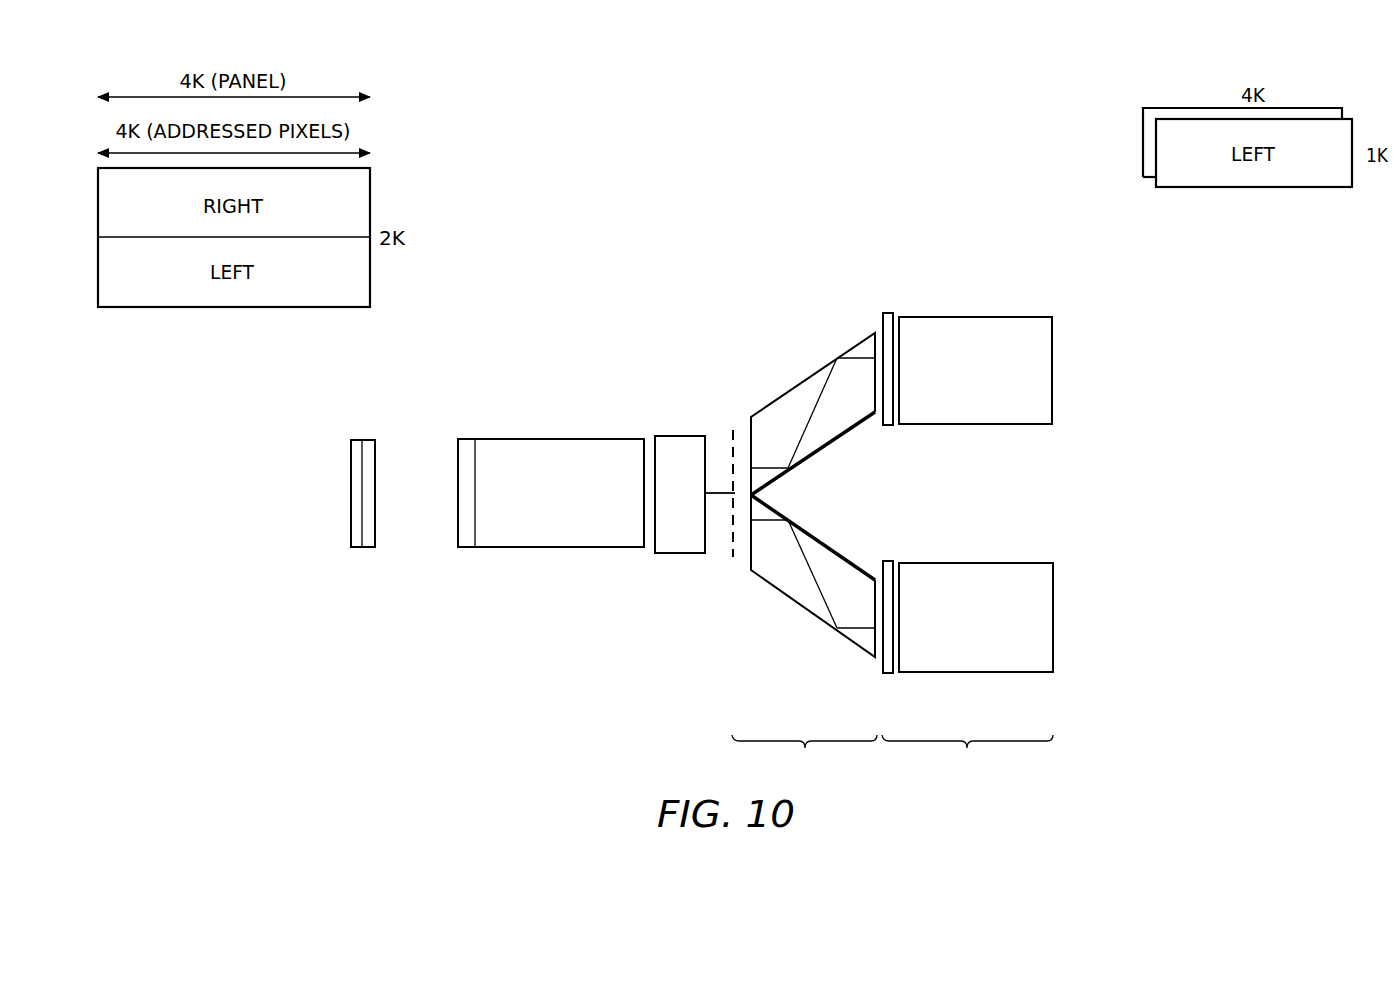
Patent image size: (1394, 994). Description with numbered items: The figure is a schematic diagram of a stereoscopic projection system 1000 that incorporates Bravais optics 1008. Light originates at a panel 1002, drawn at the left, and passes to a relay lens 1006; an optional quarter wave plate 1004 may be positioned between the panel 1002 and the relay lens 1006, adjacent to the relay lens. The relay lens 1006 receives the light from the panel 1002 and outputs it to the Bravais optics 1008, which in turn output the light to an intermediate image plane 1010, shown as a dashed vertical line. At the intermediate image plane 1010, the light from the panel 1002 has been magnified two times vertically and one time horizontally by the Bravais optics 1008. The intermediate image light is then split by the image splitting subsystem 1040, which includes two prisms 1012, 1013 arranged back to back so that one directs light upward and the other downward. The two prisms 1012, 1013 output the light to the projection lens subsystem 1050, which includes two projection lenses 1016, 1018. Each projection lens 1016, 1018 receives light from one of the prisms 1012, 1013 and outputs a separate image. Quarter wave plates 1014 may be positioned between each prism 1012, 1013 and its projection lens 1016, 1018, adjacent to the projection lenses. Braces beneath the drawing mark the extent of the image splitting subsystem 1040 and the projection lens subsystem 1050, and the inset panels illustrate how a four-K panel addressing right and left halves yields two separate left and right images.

The stereoscopic projection system 1000 is at (368, 656).
The panel 1002 is at (350, 483).
The quarter wave plate 1004 is at (458, 455).
The relay lens 1006 is at (528, 506).
The Bravais optics 1008 is at (681, 555).
The intermediate image plane 1010 is at (732, 422).
The prism 1012 is at (808, 378).
The prism 1013 is at (792, 598).
The quarter wave plate 1014 is at (890, 312).
The projection lens 1016 is at (1003, 383).
The projection lens 1018 is at (1003, 630).
The image splitting subsystem 1040 is at (804, 758).
The projection lens subsystem 1050 is at (967, 758).